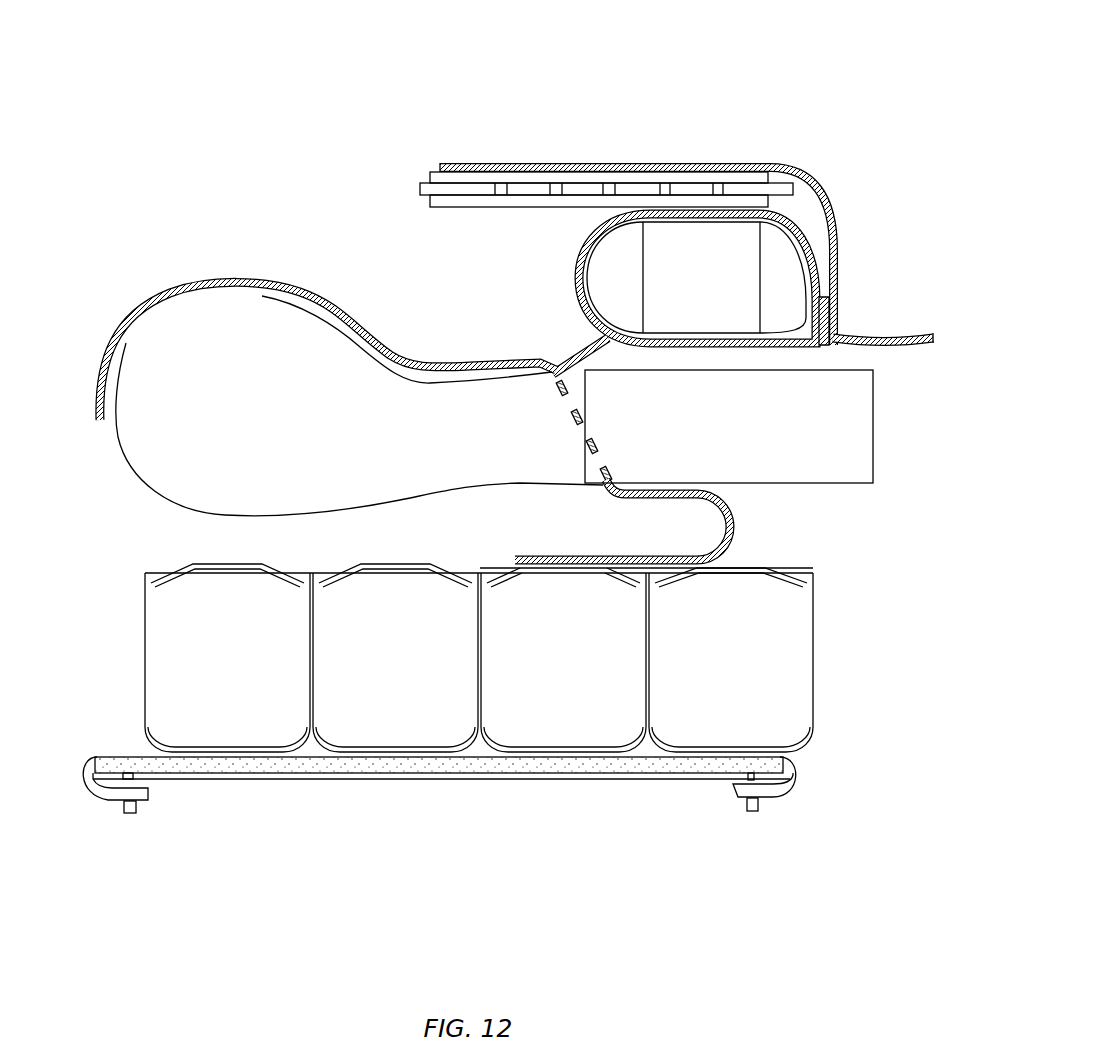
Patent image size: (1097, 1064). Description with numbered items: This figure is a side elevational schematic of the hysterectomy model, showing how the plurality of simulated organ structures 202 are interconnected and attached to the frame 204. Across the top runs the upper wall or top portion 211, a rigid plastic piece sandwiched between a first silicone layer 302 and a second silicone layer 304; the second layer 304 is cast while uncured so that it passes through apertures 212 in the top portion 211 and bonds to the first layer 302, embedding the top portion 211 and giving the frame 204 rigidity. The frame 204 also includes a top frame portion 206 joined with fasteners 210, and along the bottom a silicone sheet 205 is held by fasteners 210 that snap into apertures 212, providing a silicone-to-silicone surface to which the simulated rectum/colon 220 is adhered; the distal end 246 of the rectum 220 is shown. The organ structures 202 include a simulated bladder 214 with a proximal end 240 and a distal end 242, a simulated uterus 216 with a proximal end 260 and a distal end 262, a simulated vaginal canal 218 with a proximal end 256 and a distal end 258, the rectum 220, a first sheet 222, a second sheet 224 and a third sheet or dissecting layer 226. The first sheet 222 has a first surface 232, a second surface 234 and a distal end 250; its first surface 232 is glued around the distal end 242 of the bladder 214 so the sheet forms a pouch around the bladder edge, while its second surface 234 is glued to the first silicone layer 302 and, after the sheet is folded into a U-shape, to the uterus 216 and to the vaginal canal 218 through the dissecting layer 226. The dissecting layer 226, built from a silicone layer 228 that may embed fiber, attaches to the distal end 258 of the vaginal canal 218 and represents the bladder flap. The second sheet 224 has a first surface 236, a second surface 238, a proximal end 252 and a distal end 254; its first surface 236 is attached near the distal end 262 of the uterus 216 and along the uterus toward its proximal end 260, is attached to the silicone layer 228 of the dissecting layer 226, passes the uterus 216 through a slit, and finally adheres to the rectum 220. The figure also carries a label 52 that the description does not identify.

The bladder 52 is at (220, 513).
The plurality of simulated organ structures 202 is at (842, 341).
The frame 204 is at (745, 188).
The silicone sheet 205 is at (735, 798).
The top frame portion 206 is at (587, 190).
The fasteners 210 is at (428, 168).
The top portion 211 is at (785, 168).
The apertures 212 is at (668, 190).
The simulated bladder 214 is at (797, 223).
The simulated uterus 216 is at (219, 380).
The simulated vaginal canal 218 is at (858, 485).
The simulated rectum/colon 220 is at (790, 648).
The first sheet 222 is at (455, 173).
The second sheet 224 is at (725, 548).
The dissecting layer 226 is at (580, 350).
The silicone layer 228 is at (603, 498).
The first surface 232 is at (490, 163).
The second surface 234 is at (537, 172).
The first surface 236 is at (732, 530).
The second surface 238 is at (700, 560).
The proximal end 240 is at (808, 238).
The distal end 242 is at (585, 282).
The distal end 246 is at (145, 648).
The distal end 250 is at (933, 334).
The proximal end 252 is at (440, 165).
The distal end 254 is at (188, 560).
The proximal end 256 is at (873, 472).
The distal end 258 is at (590, 410).
The proximal end 260 is at (873, 378).
The distal end 262 is at (118, 338).
The first silicone layer 302 is at (547, 178).
The second silicone layer 304 is at (575, 203).